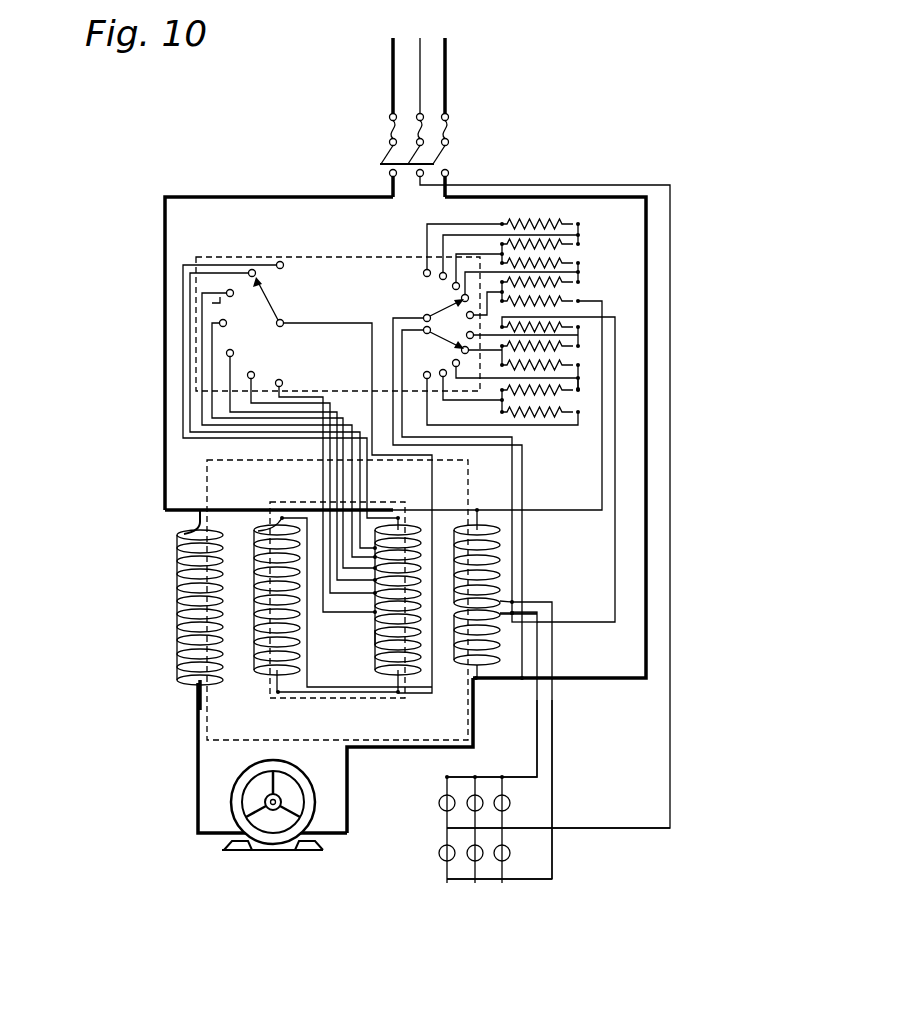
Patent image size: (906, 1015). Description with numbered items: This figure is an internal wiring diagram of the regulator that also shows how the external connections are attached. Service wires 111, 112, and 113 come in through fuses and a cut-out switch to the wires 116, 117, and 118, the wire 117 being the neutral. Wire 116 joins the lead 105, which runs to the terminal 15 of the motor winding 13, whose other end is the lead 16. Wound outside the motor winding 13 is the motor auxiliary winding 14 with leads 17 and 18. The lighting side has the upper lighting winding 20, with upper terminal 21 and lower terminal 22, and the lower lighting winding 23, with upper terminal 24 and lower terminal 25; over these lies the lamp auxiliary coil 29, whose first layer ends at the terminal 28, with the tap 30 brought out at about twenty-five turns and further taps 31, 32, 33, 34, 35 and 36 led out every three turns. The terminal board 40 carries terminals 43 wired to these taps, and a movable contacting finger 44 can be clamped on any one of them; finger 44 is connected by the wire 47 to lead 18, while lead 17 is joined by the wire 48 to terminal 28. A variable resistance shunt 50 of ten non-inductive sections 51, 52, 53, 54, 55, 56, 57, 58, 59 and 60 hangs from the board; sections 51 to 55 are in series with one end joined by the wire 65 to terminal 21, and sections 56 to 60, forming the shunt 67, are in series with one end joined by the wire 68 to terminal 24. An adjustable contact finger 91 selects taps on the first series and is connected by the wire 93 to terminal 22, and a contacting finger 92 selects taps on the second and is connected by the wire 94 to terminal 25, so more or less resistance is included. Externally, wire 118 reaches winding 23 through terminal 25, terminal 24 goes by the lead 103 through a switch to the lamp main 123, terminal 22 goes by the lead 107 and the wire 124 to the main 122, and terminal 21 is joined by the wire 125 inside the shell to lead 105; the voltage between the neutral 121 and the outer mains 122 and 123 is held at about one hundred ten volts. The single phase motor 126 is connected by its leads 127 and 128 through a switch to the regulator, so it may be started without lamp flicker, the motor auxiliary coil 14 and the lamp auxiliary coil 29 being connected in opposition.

The service wire 111 is at (391, 85).
The service wire 112 is at (421, 78).
The service wire 113 is at (447, 100).
The wire 116 is at (163, 440).
The neutral wire 117 is at (670, 450).
The wire 118 is at (646, 517).
The lead 105 is at (165, 510).
The motor lead 127 is at (198, 770).
The motor lead 128 is at (347, 793).
The motor 126 is at (232, 803).
The variable resistance shunt 50 is at (660, 265).
The resistance section 51 is at (565, 223).
The resistance section 52 is at (567, 246).
The resistance section 53 is at (567, 266).
The resistance section 54 is at (567, 286).
The resistance section 55 is at (578, 301).
The resistance section 56 is at (578, 335).
The resistance section 57 is at (572, 350).
The resistance section 58 is at (578, 378).
The resistance section 59 is at (572, 393).
The resistance section 60 is at (572, 416).
The shunt 67 is at (592, 389).
The wire 65 is at (602, 478).
The wire 68 is at (615, 557).
The adjustable contact finger 91 is at (440, 312).
The contacting finger 92 is at (430, 336).
The wire 93 is at (393, 340).
The wire 94 is at (523, 462).
The terminal board 40 is at (381, 272).
The terminals 43 is at (212, 303).
The movable contacting finger 44 is at (280, 302).
The wire 47 is at (372, 330).
The tap 36 is at (390, 514).
The tap 35 is at (256, 275).
The tap 34 is at (233, 296).
The tap 33 is at (226, 325).
The tap 32 is at (234, 352).
The tap 31 is at (254, 373).
The tap 30 is at (282, 383).
The lamp auxiliary coil 29 is at (378, 637).
The motor winding 13 is at (177, 630).
The lead 15 is at (180, 525).
The lead 16 is at (195, 708).
The wire 125 is at (292, 482).
The lead 17 is at (280, 522).
The motor auxiliary winding 14 is at (300, 633).
The lead 18 is at (268, 699).
The wire 48 is at (308, 674).
The terminal 28 is at (405, 697).
The upper terminal 21 is at (477, 518).
The upper lighting winding 20 is at (500, 537).
The lower terminal 22 is at (503, 600).
The lower lighting winding 23 is at (500, 640).
The lower terminal 25 is at (478, 681).
The lead 107 is at (520, 605).
The upper terminal 24 is at (540, 613).
The lead 103 is at (532, 620).
The neutral 121 is at (590, 827).
The main 122 is at (552, 882).
The lamp main 123 is at (520, 773).
The wire 124 is at (553, 772).